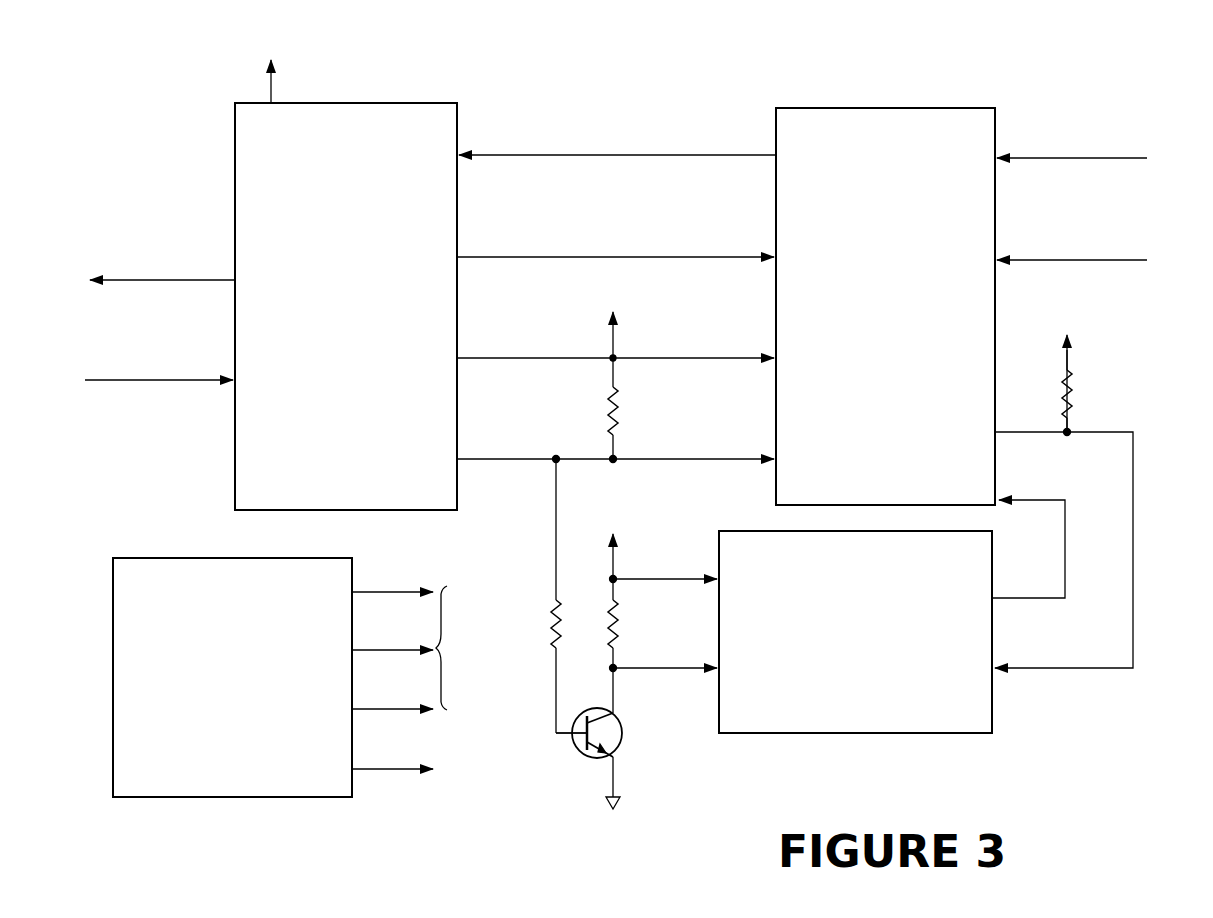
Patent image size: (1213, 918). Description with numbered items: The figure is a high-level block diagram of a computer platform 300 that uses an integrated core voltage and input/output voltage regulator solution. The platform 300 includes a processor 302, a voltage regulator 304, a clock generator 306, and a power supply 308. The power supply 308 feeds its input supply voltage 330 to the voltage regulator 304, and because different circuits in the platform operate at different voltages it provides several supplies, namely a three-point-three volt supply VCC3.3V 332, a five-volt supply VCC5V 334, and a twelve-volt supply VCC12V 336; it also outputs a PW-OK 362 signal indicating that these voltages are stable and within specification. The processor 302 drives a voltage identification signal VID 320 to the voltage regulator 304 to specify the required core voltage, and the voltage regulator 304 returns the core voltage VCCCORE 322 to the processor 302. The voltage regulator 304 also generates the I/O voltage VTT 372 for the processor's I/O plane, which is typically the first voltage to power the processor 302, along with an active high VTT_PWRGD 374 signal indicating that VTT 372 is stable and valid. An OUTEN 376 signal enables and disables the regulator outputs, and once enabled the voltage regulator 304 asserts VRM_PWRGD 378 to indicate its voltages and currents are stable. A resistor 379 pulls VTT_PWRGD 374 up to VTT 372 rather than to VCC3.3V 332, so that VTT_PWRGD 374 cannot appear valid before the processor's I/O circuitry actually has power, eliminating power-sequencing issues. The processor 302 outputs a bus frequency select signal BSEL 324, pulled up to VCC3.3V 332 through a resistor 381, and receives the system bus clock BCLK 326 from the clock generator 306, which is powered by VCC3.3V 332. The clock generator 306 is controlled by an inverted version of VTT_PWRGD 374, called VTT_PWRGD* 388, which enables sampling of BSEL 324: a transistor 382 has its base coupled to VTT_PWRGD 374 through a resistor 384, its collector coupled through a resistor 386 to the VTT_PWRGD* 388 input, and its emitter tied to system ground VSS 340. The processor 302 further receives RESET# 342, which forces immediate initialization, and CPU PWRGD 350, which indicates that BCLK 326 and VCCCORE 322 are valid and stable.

The platform 300 is at (1158, 68).
The processor 302 is at (916, 108).
The voltage regulator 304 is at (378, 103).
The clock generator 306 is at (862, 735).
The power supply 308 is at (217, 798).
The VID 320 is at (531, 155).
The VCCCORE 322 is at (531, 257).
The BSEL 324 is at (1133, 436).
The BCLK 326 is at (1064, 562).
The input supply voltage 330 is at (271, 90).
The VCC3.3V 332 is at (1067, 350).
The VCC5V 334 is at (372, 652).
The VCC12V 336 is at (372, 711).
The VSS 340 is at (620, 805).
The RESET# 342 is at (1057, 260).
The CPU PWRGD 350 is at (1057, 158).
The PW-OK 362 is at (372, 771).
The VTT 372 is at (529, 358).
The VTT_PWRGD 374 is at (529, 459).
The OUTEN 376 is at (166, 382).
The VRM_PWRGD 378 is at (166, 282).
The resistor 379 is at (620, 410).
The resistor 381 is at (1069, 398).
The transistor 382 is at (575, 752).
The resistor 384 is at (556, 617).
The resistor 386 is at (614, 617).
The VTT_PWRGD* 388 is at (658, 670).